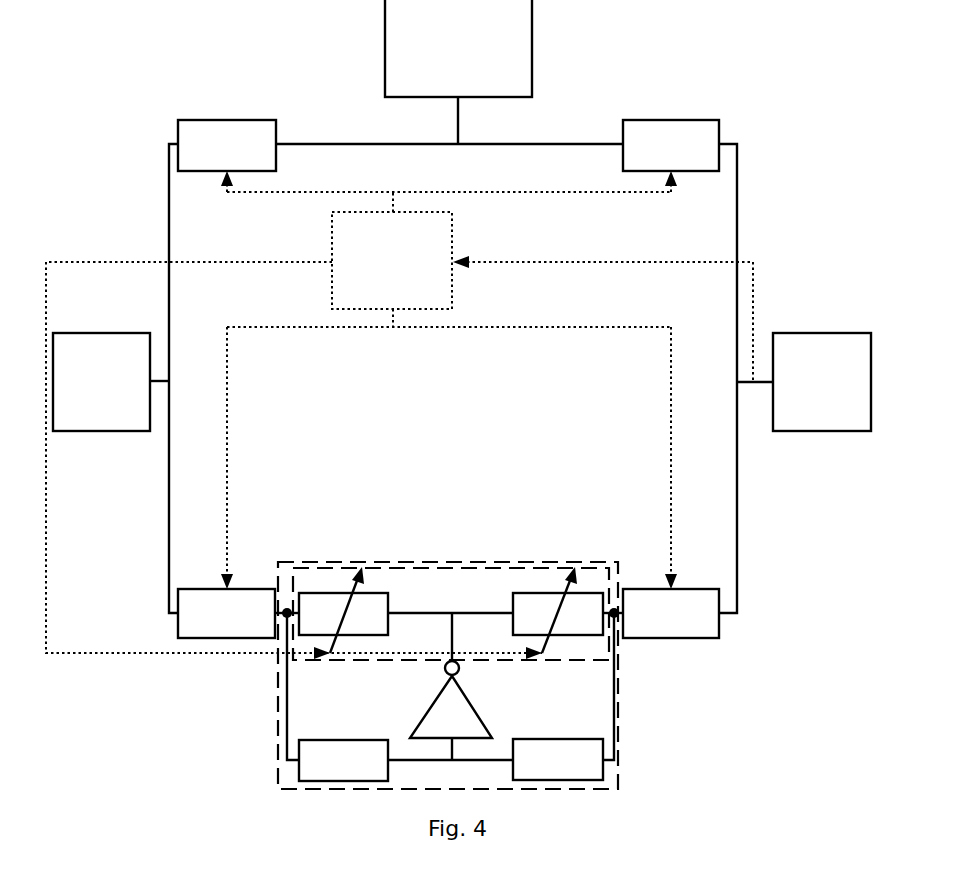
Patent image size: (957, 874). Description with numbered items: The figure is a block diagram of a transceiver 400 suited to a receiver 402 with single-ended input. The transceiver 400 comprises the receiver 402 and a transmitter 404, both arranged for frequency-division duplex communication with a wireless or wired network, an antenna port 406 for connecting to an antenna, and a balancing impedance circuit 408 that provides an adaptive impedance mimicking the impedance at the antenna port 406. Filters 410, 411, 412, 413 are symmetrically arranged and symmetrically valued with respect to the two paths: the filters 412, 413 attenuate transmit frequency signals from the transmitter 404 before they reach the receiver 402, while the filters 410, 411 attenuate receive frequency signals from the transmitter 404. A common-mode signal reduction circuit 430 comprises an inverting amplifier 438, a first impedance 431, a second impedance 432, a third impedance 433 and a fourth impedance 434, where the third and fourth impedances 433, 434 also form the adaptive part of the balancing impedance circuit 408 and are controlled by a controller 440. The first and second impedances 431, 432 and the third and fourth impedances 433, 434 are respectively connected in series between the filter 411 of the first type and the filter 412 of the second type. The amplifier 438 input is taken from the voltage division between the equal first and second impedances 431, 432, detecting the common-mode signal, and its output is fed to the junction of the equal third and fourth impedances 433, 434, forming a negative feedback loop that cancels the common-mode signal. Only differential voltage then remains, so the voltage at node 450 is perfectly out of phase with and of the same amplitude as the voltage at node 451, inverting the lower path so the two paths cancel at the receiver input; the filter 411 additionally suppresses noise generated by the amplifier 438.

The transceiver 400 is at (842, 636).
The receiver 402 is at (806, 342).
The transmitter 404 is at (140, 372).
The antenna port 406 is at (410, 48).
The balancing impedance circuit 408 is at (437, 583).
The filter 410 is at (186, 135).
The filter 411 is at (713, 618).
The filter 412 is at (227, 634).
The filter 413 is at (702, 139).
The common-mode signal reduction circuit 430 is at (290, 770).
The first impedance 431 is at (345, 755).
The second impedance 432 is at (545, 748).
The third impedance 433 is at (357, 626).
The fourth impedance 434 is at (575, 628).
The inverting amplifier 438 is at (440, 696).
The controller 440 is at (365, 290).
The node 450 is at (283, 608).
The node 451 is at (613, 611).